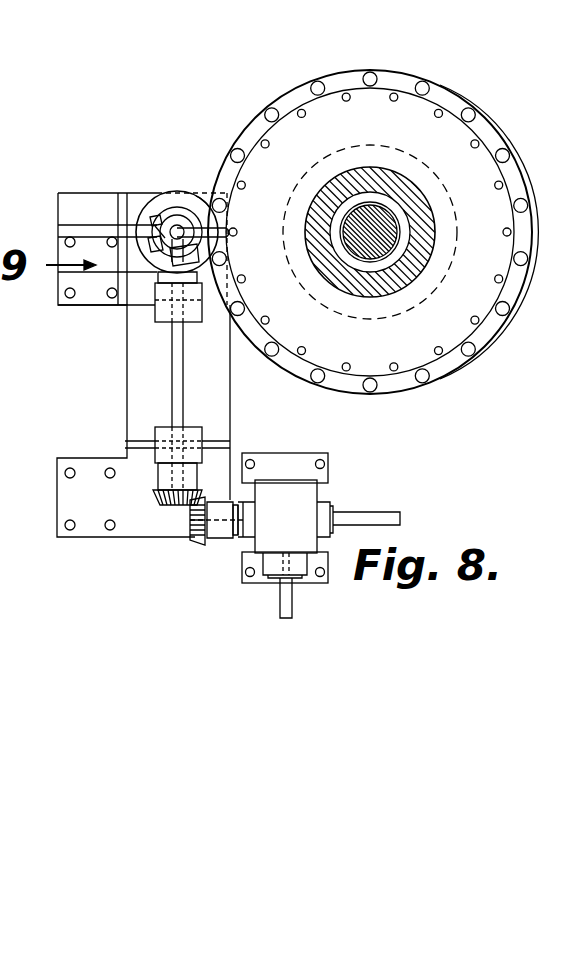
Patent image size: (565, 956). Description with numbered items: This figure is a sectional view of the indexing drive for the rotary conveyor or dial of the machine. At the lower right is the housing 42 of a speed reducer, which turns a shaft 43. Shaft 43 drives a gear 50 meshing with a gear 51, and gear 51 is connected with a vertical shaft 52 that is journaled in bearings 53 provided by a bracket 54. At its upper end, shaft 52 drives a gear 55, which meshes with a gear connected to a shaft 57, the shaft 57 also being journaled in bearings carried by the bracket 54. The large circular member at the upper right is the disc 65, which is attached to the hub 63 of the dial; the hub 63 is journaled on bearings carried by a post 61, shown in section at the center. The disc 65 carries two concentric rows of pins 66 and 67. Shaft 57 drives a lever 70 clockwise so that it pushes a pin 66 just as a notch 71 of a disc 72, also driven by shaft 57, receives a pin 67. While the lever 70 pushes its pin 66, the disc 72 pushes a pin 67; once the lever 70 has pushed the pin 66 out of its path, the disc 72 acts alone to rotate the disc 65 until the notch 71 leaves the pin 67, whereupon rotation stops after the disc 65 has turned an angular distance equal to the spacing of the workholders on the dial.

The housing 42 is at (302, 492).
The shaft 43 is at (380, 516).
The gear 50 is at (196, 532).
The gear 51 is at (153, 499).
The shaft 52 is at (184, 378).
The bearings 53 is at (164, 316).
The bracket 54 is at (125, 379).
The gear 55 is at (163, 256).
The shaft 57 is at (175, 226).
The post 61 is at (348, 214).
The hub 63 is at (395, 180).
The disc 65 is at (291, 366).
The pins 66 is at (315, 356).
The pins 67 is at (406, 378).
The lever 70 is at (222, 240).
The notch 71 is at (205, 200).
The disc 72 is at (152, 206).